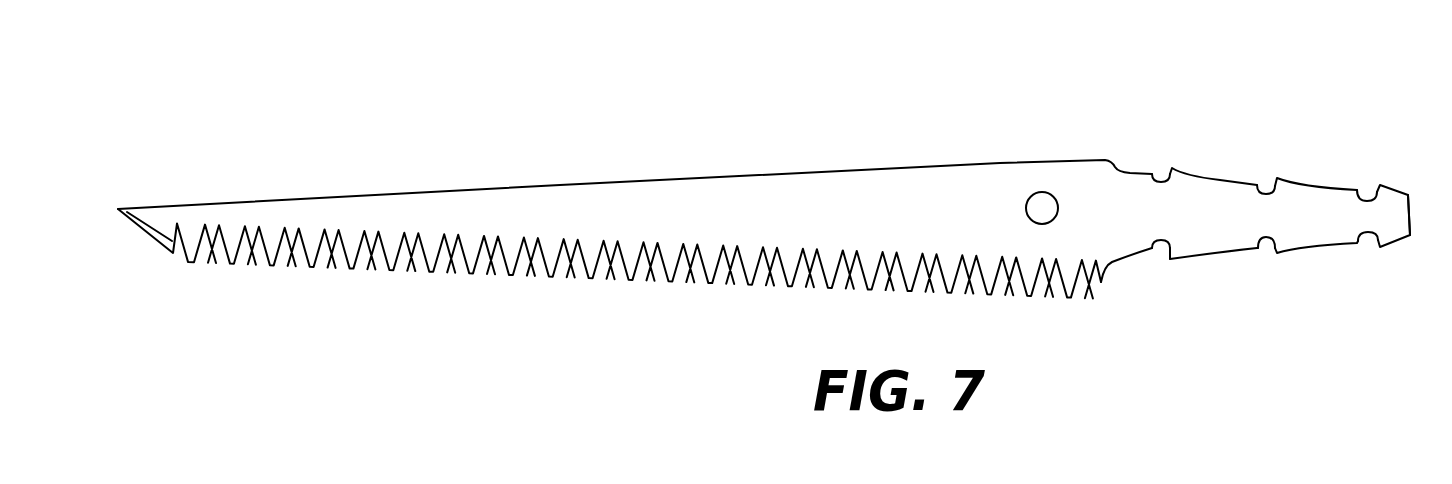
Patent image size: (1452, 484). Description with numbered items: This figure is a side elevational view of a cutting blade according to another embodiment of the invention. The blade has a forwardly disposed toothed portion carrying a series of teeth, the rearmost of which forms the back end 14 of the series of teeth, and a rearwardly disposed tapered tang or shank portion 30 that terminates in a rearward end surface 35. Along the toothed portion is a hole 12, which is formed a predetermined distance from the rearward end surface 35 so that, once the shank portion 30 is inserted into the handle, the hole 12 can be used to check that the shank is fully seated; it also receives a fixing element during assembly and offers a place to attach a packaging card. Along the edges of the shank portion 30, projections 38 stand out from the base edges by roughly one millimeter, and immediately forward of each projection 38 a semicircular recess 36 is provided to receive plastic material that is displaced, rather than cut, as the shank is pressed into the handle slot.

The hole 12 is at (1046, 208).
The back end of the series of teeth 14 is at (1100, 285).
The tapered tang or shank portion 30 is at (1278, 103).
The rearward end surface 35 is at (1412, 211).
The semicircular recess 36 is at (1162, 173).
The projection 38 is at (1277, 178).